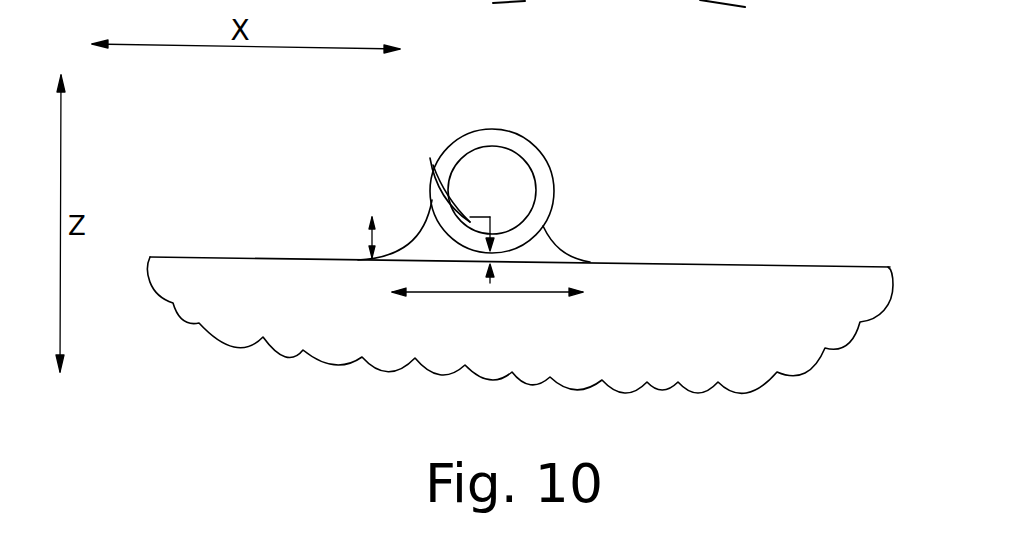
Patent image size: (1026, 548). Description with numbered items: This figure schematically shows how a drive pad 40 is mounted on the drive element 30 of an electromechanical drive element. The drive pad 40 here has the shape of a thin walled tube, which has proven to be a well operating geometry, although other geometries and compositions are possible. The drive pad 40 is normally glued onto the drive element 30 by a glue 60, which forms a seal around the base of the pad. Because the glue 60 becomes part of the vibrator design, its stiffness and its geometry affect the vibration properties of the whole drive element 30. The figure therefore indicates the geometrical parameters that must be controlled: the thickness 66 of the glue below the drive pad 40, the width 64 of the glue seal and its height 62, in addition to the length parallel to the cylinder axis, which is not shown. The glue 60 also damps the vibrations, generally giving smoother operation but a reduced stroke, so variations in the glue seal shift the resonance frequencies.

The drive element 30 is at (802, 267).
The drive pad 40 is at (535, 150).
The glue 60 is at (563, 252).
The height 62 is at (370, 217).
The width 64 is at (537, 293).
The thickness 66 is at (430, 158).